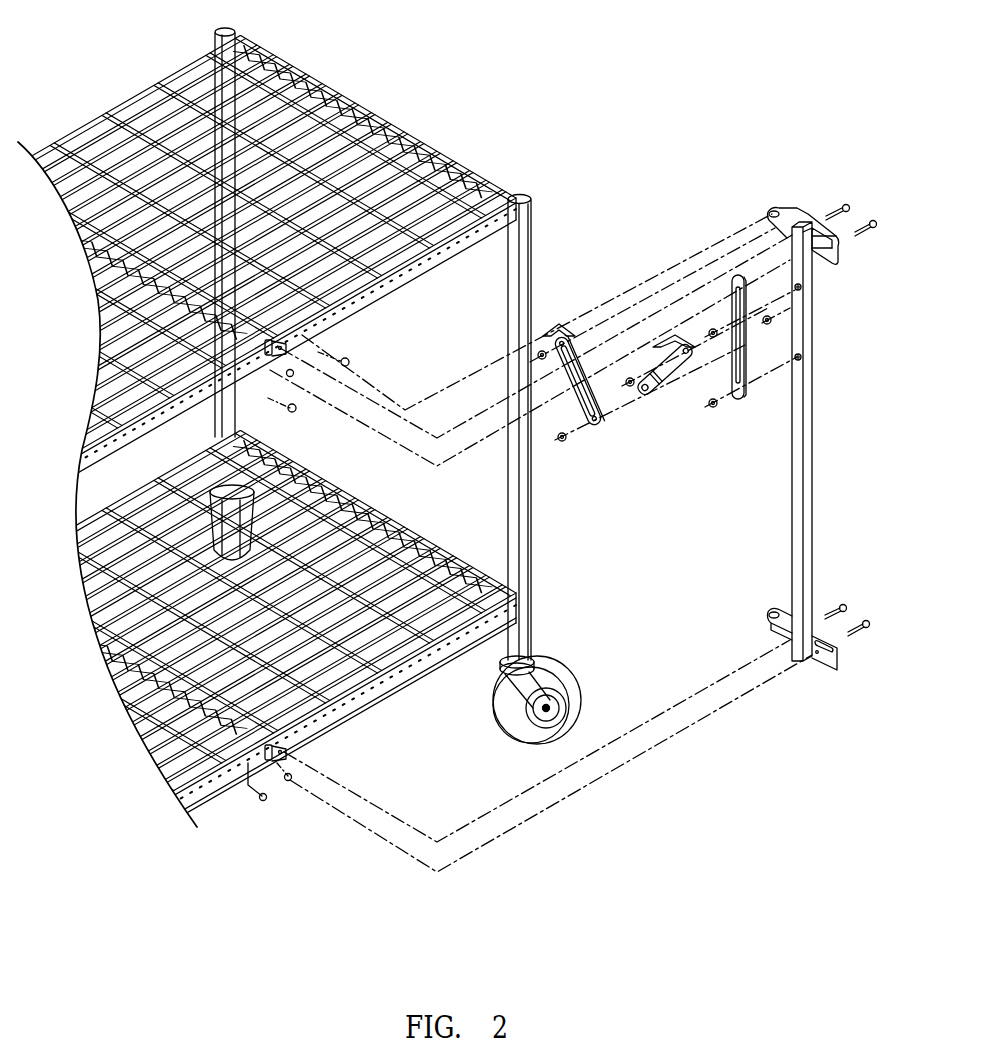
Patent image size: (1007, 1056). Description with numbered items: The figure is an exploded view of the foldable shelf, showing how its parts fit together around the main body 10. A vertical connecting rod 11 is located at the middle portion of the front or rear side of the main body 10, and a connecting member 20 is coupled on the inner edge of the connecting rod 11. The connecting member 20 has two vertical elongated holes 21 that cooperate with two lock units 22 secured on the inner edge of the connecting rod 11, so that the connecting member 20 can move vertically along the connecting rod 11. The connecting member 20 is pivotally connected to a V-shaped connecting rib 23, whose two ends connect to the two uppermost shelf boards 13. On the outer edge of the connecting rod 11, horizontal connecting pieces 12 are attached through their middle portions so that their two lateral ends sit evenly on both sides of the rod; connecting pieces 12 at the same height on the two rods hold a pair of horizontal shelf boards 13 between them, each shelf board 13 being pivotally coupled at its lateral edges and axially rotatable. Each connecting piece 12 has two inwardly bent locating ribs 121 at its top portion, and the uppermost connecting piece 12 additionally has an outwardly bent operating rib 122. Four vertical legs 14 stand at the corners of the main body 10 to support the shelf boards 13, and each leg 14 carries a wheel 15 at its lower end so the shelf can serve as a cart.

The main body 10 is at (481, 127).
The vertical connecting rod 11 is at (795, 483).
The horizontal connecting piece 12 is at (775, 224).
The locating rib 121 is at (770, 209).
The operating rib 122 is at (810, 207).
The shelf board 13 is at (382, 162).
The vertical leg 14 is at (523, 271).
The wheel 15 is at (568, 690).
The connecting member 20 is at (714, 382).
The vertical elongated hole 21 is at (733, 398).
The lock unit 22 is at (800, 285).
The V-shaped connecting rib 23 is at (663, 358).